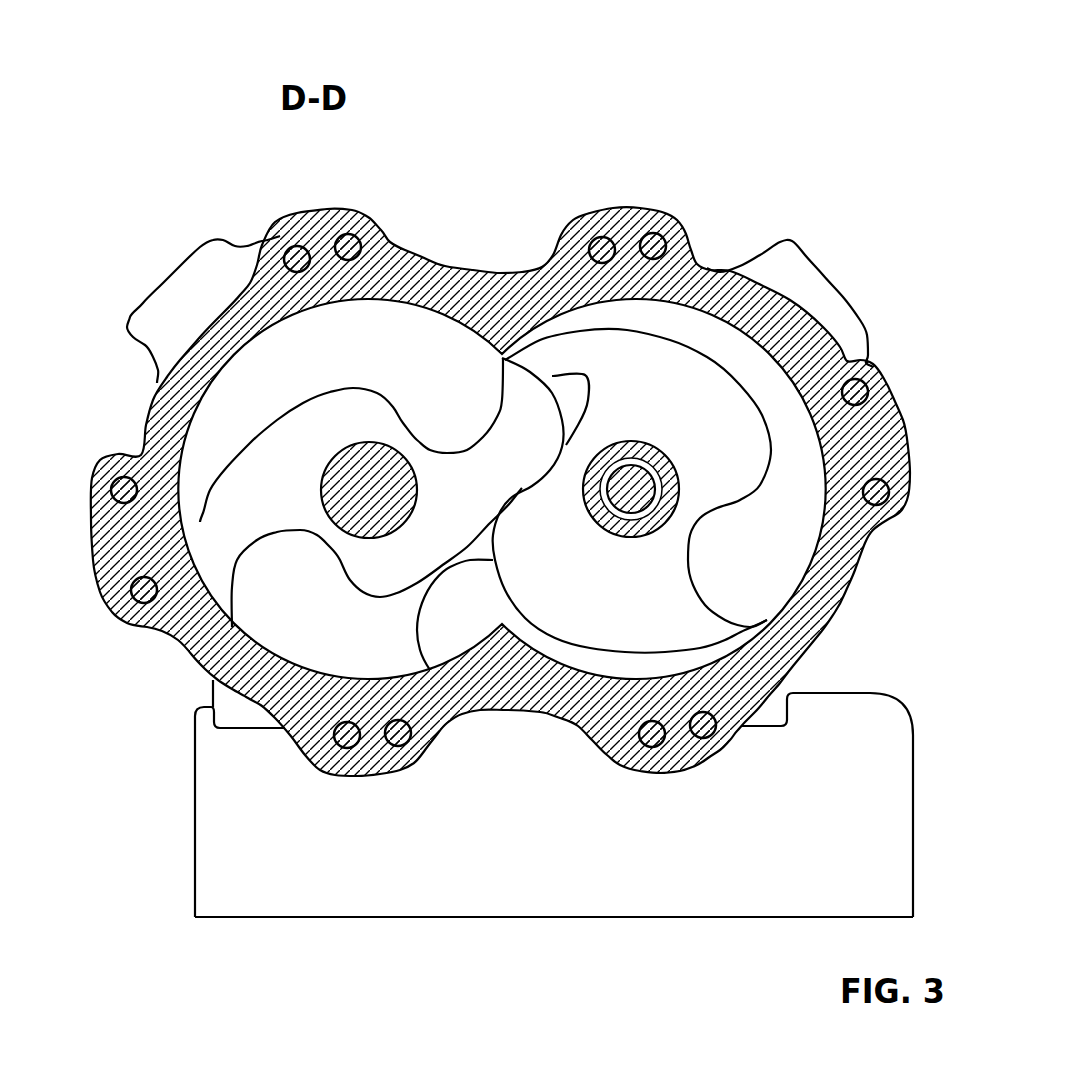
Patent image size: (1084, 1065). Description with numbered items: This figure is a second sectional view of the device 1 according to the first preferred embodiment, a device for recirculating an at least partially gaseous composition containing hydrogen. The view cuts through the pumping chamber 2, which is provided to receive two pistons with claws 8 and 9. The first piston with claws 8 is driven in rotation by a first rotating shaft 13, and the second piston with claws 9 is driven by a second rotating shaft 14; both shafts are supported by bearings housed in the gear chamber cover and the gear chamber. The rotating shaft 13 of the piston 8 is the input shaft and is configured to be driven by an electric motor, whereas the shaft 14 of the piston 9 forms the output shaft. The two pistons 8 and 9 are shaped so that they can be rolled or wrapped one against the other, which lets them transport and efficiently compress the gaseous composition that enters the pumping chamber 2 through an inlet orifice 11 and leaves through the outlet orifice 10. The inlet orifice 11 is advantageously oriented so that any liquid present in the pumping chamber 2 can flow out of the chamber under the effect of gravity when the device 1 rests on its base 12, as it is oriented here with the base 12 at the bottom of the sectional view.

The device 1 is at (731, 122).
The pumping chamber 2 is at (780, 553).
The piston with claws 8 is at (727, 383).
The piston with claws 9 is at (337, 541).
The outlet orifice 10 is at (710, 272).
The inlet orifice 11 is at (487, 620).
The base 12 is at (832, 900).
The first rotating shaft 13 is at (692, 506).
The second rotating shaft 14 is at (330, 513).